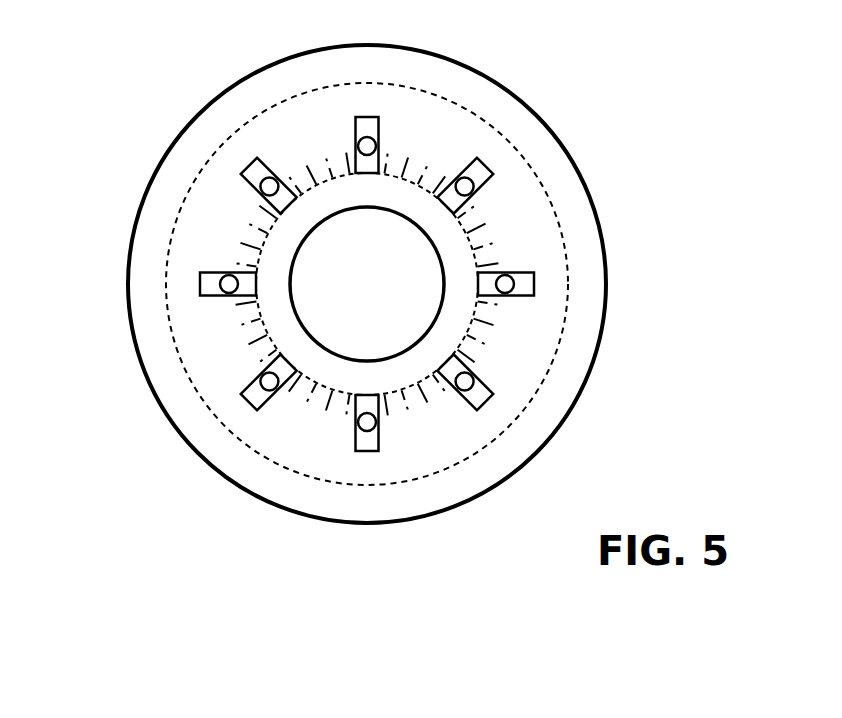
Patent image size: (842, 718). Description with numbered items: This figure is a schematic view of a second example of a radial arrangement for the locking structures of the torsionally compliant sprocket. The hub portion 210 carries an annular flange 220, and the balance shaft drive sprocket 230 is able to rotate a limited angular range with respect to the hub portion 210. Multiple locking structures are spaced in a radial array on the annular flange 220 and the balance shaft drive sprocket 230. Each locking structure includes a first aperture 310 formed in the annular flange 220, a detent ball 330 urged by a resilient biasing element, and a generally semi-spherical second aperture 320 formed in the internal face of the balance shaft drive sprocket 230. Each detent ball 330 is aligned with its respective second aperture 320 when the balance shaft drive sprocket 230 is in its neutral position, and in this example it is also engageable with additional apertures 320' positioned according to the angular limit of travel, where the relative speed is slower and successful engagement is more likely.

The hub portion 210 is at (386, 334).
The annular flange 220 is at (166, 263).
The balance shaft drive sprocket 230 is at (178, 140).
The first aperture 310 is at (370, 117).
The detent ball 330 is at (370, 146).
The second aperture 320 is at (367, 284).
The additional aperture 320' is at (367, 284).